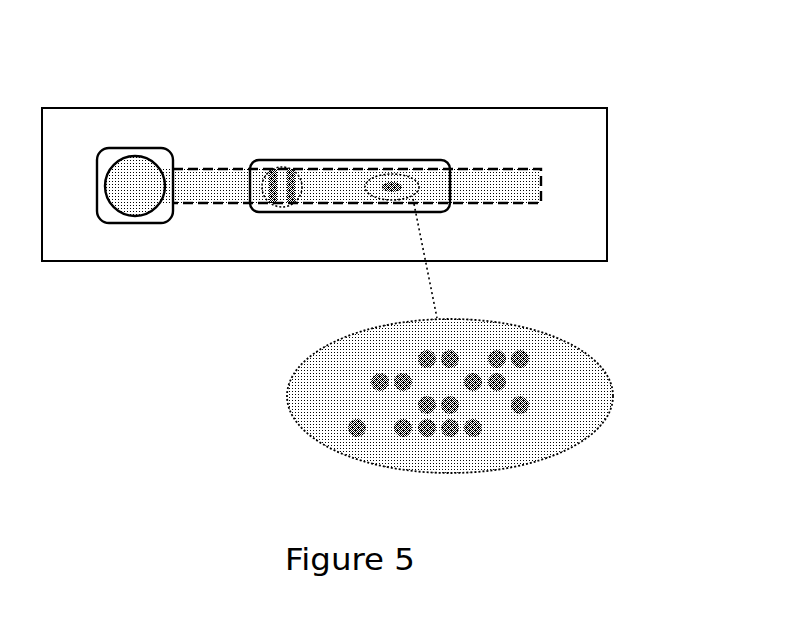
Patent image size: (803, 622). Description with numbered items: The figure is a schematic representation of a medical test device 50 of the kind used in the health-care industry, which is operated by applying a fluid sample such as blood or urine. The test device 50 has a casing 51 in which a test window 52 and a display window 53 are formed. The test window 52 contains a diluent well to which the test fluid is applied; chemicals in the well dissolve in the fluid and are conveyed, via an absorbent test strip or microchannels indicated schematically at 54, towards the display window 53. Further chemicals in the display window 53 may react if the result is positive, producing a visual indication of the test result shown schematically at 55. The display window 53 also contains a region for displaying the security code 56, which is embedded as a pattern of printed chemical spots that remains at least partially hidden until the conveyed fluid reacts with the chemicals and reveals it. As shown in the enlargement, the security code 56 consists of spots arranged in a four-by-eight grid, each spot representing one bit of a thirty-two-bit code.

The medical test device 50 is at (582, 66).
The casing 51 is at (607, 156).
The test window 52 is at (152, 148).
The display window 53 is at (445, 160).
The absorbent test strip or microchannels 54 is at (205, 167).
The visual indication of the test result 55 is at (272, 168).
The security code 56 is at (398, 170).